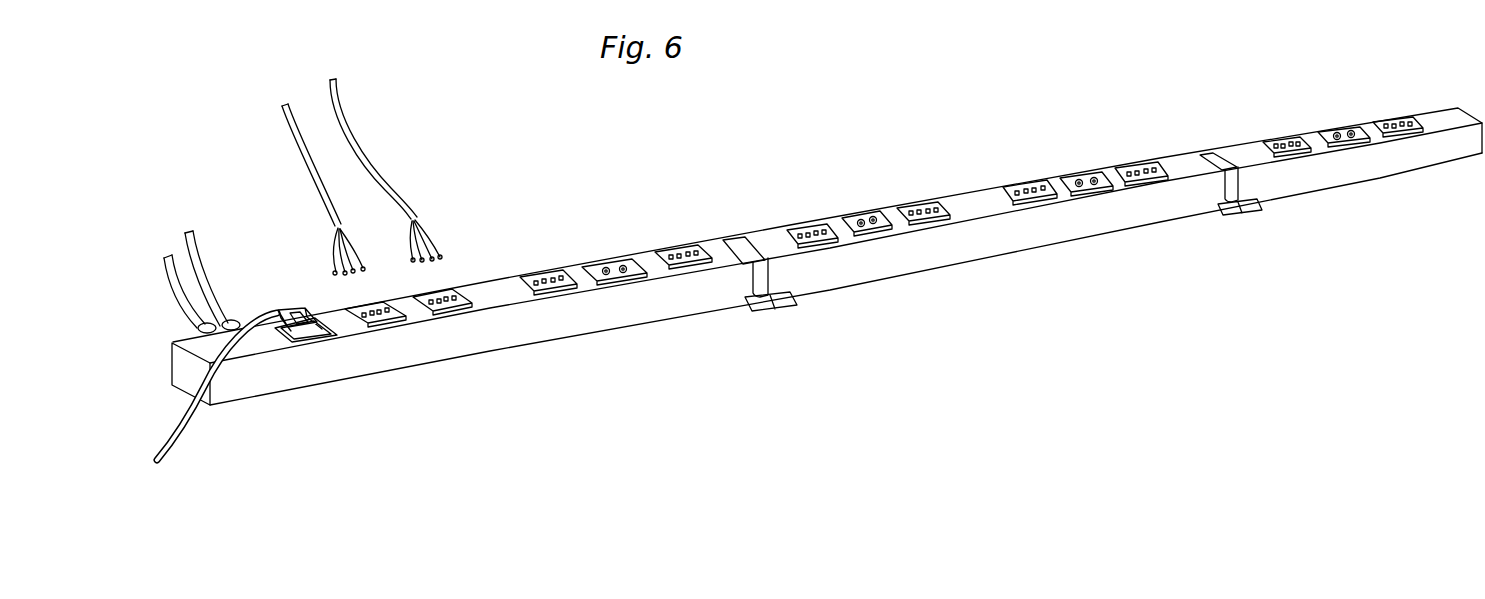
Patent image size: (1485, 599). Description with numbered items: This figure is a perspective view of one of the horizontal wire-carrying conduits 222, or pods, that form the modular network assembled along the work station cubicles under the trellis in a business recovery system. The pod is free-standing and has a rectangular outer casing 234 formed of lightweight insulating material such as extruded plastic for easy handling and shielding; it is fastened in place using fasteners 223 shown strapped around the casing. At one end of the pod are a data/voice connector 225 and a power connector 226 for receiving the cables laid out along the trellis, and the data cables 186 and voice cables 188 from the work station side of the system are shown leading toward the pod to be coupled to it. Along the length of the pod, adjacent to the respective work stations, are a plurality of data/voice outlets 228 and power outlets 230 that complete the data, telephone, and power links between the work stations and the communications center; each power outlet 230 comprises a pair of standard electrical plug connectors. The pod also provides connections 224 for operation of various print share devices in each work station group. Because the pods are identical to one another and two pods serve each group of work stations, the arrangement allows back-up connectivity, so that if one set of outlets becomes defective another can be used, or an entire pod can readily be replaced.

The data cables 186 is at (313, 158).
The voice cables 188 is at (357, 148).
The horizontal wire-carrying conduits 222 is at (827, 256).
The fasteners 223 is at (793, 308).
The connections 224 is at (317, 330).
The data/voice connector 225 is at (393, 322).
The power connector 226 is at (238, 320).
The data/voice outlets 228 is at (548, 273).
The power outlets 230 is at (610, 263).
The rectangular outer casing 234 is at (607, 312).